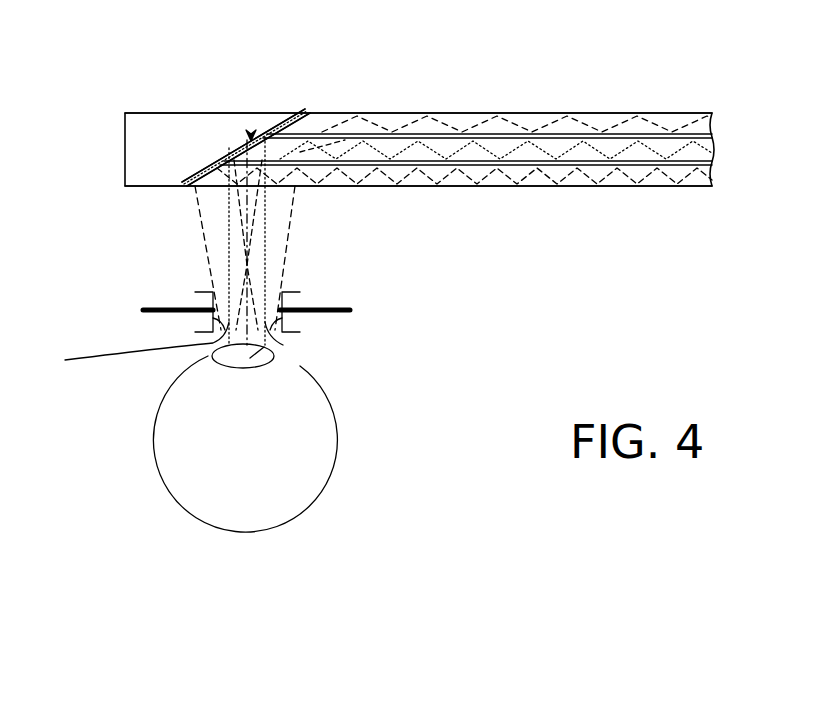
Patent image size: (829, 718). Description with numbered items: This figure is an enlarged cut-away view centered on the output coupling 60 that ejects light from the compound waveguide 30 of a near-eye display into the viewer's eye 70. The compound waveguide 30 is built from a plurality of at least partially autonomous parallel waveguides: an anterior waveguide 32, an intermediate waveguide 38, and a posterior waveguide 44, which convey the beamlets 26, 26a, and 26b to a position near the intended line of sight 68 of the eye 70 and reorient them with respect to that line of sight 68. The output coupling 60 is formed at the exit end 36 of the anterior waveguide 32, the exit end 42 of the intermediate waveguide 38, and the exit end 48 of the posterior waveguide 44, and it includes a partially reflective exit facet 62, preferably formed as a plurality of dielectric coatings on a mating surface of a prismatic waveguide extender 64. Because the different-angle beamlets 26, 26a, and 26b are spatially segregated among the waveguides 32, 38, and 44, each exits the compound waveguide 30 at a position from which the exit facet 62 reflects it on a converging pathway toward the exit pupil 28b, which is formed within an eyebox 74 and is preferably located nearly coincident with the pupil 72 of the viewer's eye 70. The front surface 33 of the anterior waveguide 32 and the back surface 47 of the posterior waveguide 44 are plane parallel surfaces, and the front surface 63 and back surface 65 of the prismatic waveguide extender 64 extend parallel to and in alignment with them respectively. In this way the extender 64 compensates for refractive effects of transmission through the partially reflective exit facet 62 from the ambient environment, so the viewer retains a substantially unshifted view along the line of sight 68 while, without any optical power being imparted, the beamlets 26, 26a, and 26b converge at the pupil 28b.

The compound waveguide 30 is at (598, 189).
The anterior waveguide 32 is at (530, 112).
The front surface 33 is at (600, 113).
The exit end 36 is at (290, 118).
The intermediate waveguide 38 is at (705, 154).
The exit end 42 is at (235, 147).
The posterior waveguide 44 is at (693, 184).
The back surface 47 is at (560, 186).
The exit end 48 is at (232, 173).
The output coupling 60 is at (249, 137).
The partially reflective exit facet 62 is at (335, 140).
The front surface 63 is at (203, 113).
The prismatic waveguide extender 64 is at (183, 122).
The back surface 65 is at (158, 184).
The line of sight 68 is at (232, 212).
The beamlet 26 is at (265, 243).
The beamlet 26a is at (208, 240).
The beamlet 26b is at (295, 194).
The exit pupil 28b is at (283, 345).
The viewer's eye 70 is at (300, 492).
The pupil 72 is at (300, 355).
The eyebox 74 is at (157, 349).